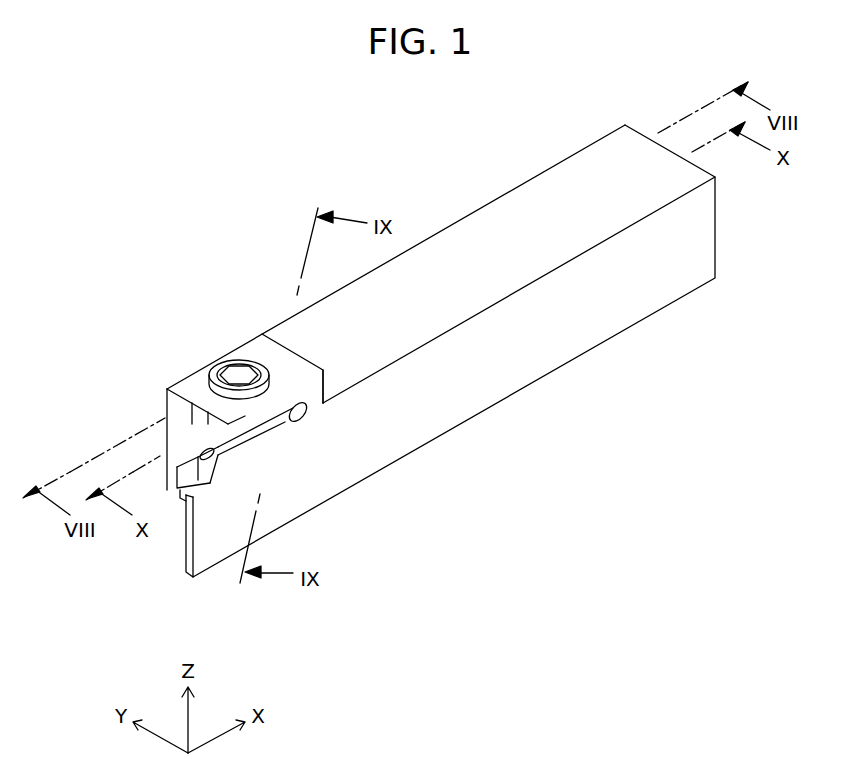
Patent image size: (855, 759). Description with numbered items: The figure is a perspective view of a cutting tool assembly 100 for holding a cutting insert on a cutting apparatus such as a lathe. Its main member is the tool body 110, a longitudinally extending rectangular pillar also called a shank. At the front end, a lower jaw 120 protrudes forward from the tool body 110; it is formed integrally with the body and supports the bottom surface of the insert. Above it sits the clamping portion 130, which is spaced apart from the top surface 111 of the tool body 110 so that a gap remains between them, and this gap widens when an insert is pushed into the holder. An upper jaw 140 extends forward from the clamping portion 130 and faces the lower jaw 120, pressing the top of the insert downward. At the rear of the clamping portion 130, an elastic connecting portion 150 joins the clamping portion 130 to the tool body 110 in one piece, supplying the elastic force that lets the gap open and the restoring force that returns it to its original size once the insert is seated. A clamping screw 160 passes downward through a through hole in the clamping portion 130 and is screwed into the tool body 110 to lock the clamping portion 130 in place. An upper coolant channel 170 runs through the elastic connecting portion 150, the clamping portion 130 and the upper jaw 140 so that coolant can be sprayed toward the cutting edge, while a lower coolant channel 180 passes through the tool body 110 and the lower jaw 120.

The cutting tool assembly 100 is at (217, 298).
The tool body 110 is at (497, 225).
The top surface of the tool body 111 is at (303, 421).
The lower jaw 120 is at (208, 505).
The clamping portion 130 is at (265, 358).
The upper jaw 140 is at (226, 424).
The elastic connecting portion 150 is at (318, 390).
The clamping screw 160 is at (223, 368).
The upper coolant channel 170 is at (205, 453).
The lower coolant channel 180 is at (183, 500).